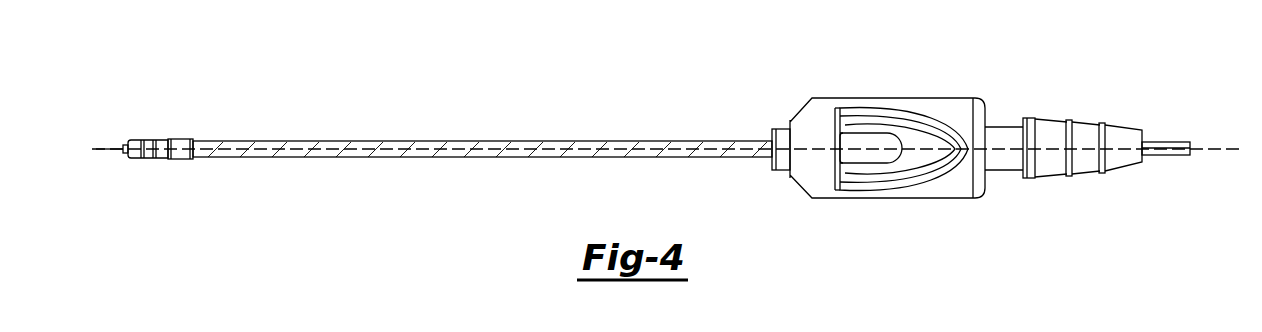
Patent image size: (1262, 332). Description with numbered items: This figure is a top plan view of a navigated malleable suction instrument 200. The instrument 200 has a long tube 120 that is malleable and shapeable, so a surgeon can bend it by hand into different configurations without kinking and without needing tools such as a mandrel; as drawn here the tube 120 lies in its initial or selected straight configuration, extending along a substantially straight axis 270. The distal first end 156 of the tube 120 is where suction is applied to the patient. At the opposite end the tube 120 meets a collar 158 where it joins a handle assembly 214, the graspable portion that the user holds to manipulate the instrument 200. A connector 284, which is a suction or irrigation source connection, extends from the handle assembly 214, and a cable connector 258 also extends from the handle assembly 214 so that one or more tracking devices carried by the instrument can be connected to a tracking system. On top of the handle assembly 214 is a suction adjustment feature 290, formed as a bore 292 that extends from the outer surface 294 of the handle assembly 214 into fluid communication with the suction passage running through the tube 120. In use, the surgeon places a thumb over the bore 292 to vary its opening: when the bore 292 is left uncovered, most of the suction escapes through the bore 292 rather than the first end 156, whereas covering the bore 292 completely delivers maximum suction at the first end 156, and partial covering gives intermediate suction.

The navigated malleable suction instrument 200 is at (350, 63).
The first end 156 is at (123, 147).
The substantially straight axis 270 is at (104, 150).
The tube 120 is at (466, 128).
The collar 158 is at (767, 128).
The handle assembly 214 is at (936, 93).
The bore 292 is at (864, 139).
The suction adjustment feature 290 is at (869, 166).
The outer surface 294 is at (925, 168).
The cable connector 258 is at (1183, 141).
The connector 284 is at (1145, 160).